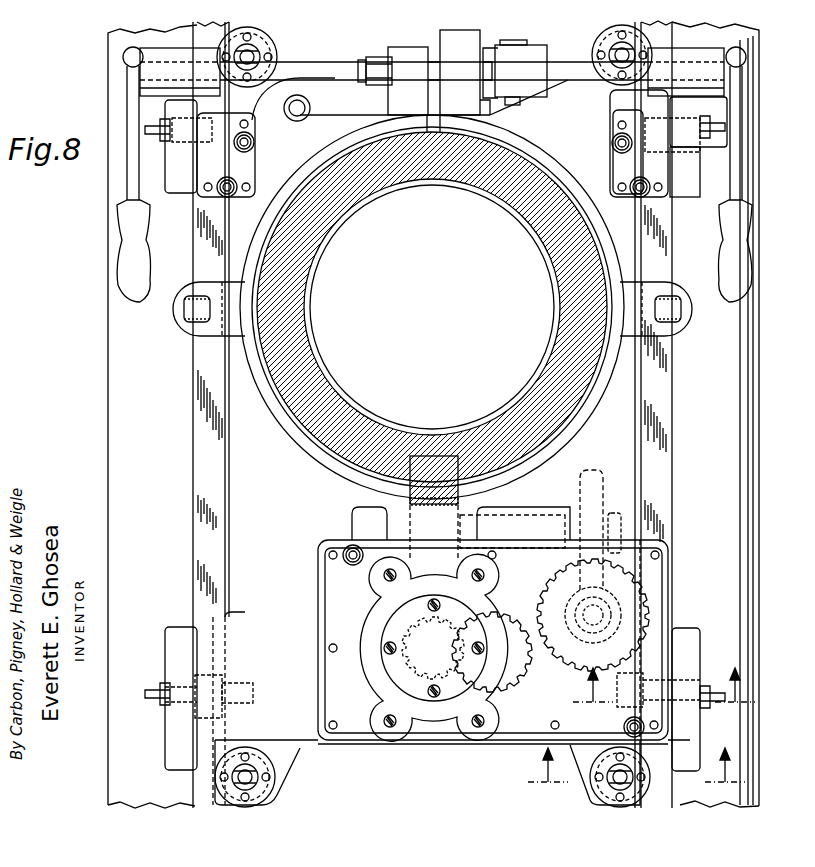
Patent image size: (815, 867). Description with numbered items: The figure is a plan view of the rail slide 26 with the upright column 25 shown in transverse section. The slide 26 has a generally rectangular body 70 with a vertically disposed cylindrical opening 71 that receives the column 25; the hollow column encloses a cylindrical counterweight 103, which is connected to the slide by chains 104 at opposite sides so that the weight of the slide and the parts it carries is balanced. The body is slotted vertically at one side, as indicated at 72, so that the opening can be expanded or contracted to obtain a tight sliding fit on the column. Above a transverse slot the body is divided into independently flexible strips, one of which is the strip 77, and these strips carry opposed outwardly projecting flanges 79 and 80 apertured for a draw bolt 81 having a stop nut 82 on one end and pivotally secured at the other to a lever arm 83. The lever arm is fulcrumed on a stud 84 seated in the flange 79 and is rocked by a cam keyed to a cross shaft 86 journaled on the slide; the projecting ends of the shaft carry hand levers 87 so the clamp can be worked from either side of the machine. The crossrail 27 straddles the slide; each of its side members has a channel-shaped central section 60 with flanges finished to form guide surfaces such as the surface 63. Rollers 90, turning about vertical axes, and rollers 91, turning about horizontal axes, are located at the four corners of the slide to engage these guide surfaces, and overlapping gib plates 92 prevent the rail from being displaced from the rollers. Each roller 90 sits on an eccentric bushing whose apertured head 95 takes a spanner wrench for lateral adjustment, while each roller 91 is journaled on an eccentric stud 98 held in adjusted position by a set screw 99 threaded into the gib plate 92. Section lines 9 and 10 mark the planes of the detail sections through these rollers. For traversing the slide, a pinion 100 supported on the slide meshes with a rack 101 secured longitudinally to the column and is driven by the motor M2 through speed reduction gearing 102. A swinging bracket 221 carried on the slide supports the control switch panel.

The section line 9- 9 is at (664, 698).
The section line 10- 10 is at (636, 777).
The upright column 25 is at (598, 322).
The slide 26 is at (240, 549).
The crossrail 27 is at (116, 330).
The central section 60 is at (108, 297).
The guide surface 63 is at (194, 382).
The body 70 is at (313, 740).
The cylindrical opening 71 is at (604, 310).
The slot 72 is at (430, 108).
The flexible strip 77 is at (515, 138).
The flange 79 is at (478, 42).
The flange 80 is at (405, 46).
The draw bolt 81 is at (433, 61).
The stop nut 82 is at (378, 56).
The lever arm 83 is at (535, 52).
The stud 84 is at (485, 88).
The cross shaft 86 is at (316, 62).
The hand lever 87 is at (120, 258).
The roller 90 is at (276, 44).
The roller 91 is at (200, 160).
The gib plate 92 is at (178, 190).
The head 95 is at (252, 40).
The stud 98 is at (275, 126).
The set screw 99 is at (181, 133).
The pinion 100 is at (415, 554).
The rack 101 is at (412, 492).
The speed reduction gearing 102 is at (555, 595).
The counterweight 103 is at (540, 342).
The chain 104 is at (195, 330).
The swinging bracket 221 is at (295, 122).
The motor M2 is at (370, 602).